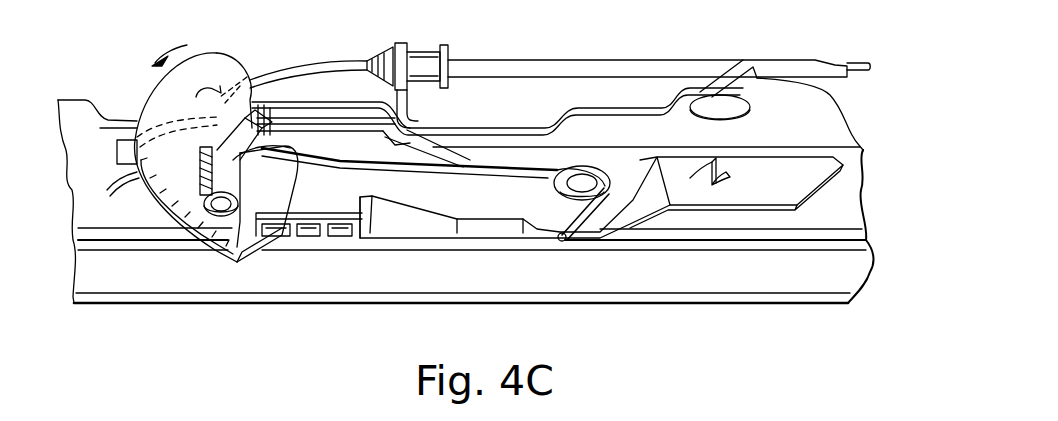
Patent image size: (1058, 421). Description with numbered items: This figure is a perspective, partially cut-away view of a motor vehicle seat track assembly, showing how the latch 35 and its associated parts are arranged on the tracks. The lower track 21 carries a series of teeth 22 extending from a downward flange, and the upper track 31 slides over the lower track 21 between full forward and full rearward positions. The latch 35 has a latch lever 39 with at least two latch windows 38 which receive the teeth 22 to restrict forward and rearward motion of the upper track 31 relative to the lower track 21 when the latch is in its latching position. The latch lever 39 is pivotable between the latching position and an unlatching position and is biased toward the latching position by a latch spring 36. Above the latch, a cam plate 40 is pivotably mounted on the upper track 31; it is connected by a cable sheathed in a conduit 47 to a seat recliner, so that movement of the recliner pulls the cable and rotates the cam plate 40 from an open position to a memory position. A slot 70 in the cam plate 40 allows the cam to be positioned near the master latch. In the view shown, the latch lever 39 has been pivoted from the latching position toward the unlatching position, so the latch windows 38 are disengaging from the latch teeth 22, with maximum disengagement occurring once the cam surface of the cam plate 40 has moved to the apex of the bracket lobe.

The lower track 21 is at (775, 286).
The teeth 22 is at (338, 237).
The upper track 31 is at (862, 232).
The latch 35 is at (752, 160).
The latch spring 36 is at (457, 172).
The latch windows 38 is at (346, 218).
The latch lever 39 is at (508, 204).
The cam plate 40 is at (190, 103).
The conduit 47 is at (582, 64).
The slot 70 is at (212, 190).